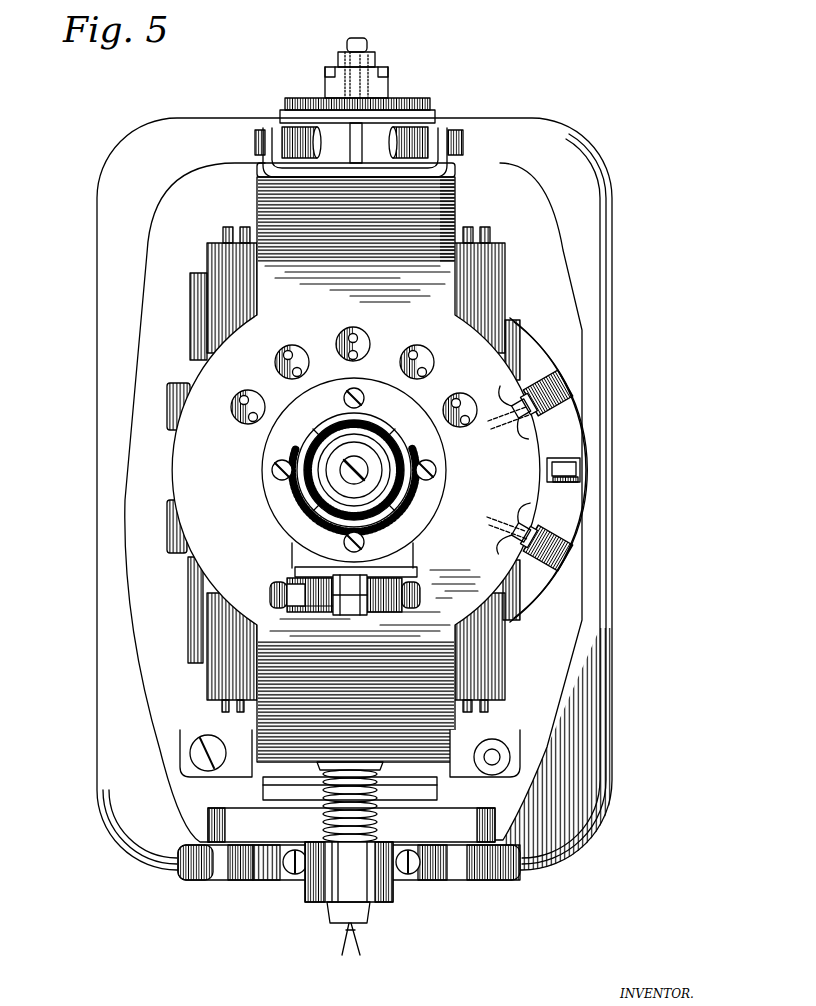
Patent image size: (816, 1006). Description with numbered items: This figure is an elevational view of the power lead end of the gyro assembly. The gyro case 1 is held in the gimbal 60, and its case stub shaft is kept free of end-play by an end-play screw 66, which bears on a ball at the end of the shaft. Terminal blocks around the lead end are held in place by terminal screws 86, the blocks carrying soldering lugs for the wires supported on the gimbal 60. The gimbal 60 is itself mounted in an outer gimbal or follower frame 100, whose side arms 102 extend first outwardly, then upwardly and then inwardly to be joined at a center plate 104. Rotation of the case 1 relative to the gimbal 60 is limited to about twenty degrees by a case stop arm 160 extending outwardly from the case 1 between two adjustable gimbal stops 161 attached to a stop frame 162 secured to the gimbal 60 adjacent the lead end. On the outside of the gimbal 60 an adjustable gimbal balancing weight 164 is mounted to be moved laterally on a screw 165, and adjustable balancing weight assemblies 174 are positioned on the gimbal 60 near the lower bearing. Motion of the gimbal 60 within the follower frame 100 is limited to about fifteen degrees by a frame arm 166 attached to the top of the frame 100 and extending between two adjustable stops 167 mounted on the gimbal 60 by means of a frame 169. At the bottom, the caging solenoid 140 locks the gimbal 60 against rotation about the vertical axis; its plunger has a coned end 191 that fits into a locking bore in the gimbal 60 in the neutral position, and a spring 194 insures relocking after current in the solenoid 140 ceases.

The gyro case 1 is at (480, 288).
The gimbal 60 is at (446, 300).
The end-play screw 66 is at (347, 473).
The terminal screws 86 is at (362, 362).
The follower frame 100 is at (570, 178).
The side arms 102 is at (567, 330).
The center plate 104 is at (407, 99).
The caging solenoid 140 is at (378, 886).
The case stop arm 160 is at (565, 472).
The adjustable gimbal stops 161 is at (560, 400).
The stop frame 162 is at (538, 503).
The adjustable gimbal balancing weight 164 is at (372, 613).
The screw 165 is at (316, 606).
The frame arm 166 is at (356, 140).
The adjustable stops 167 is at (302, 136).
The frame 169 is at (452, 205).
The adjustable balancing weight assemblies 174 is at (205, 751).
The coned end 191 is at (381, 775).
The spring 194 is at (325, 817).